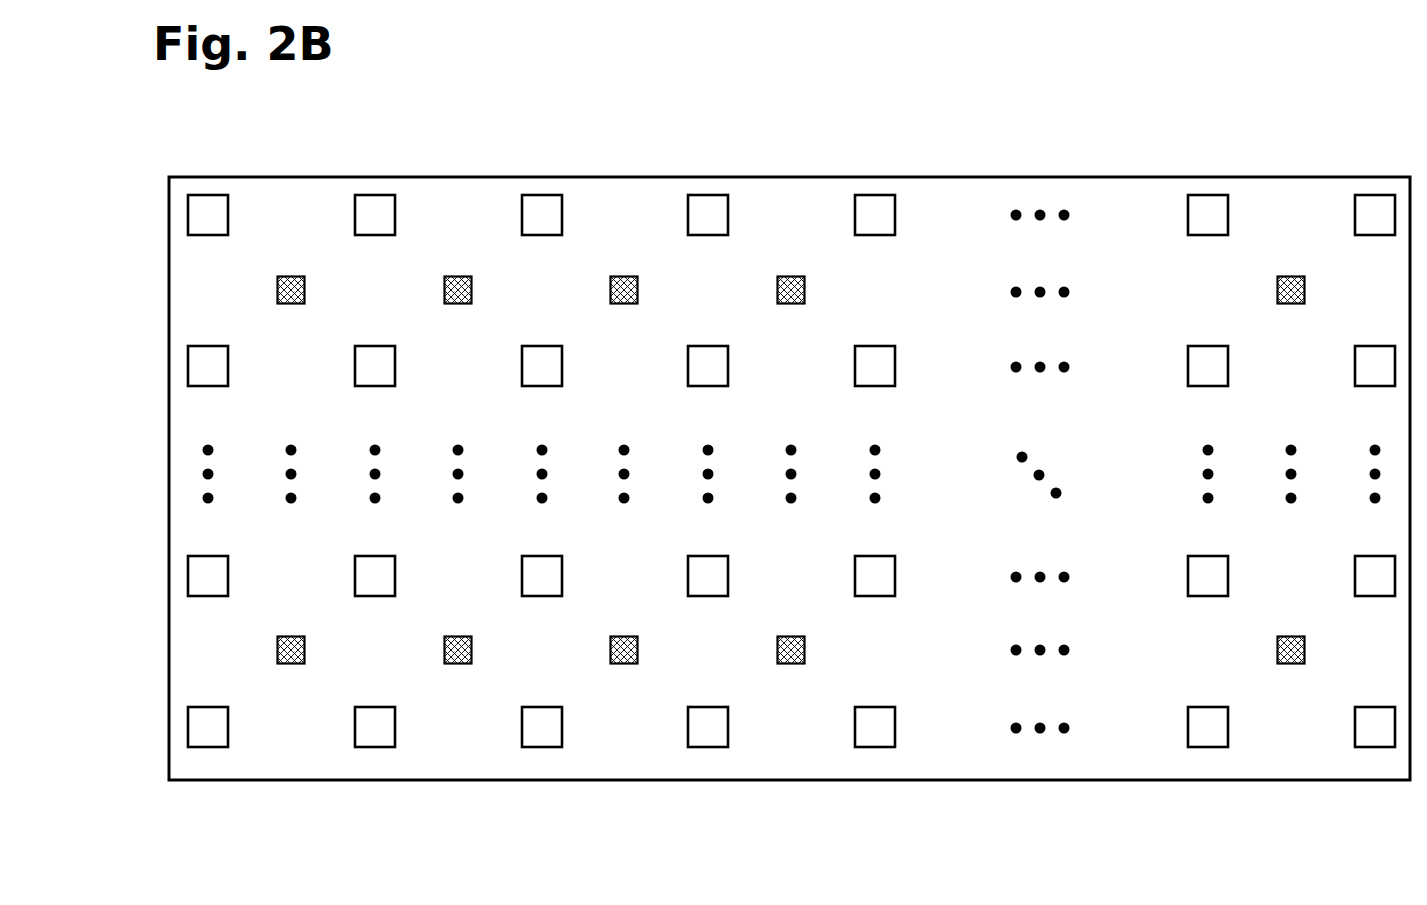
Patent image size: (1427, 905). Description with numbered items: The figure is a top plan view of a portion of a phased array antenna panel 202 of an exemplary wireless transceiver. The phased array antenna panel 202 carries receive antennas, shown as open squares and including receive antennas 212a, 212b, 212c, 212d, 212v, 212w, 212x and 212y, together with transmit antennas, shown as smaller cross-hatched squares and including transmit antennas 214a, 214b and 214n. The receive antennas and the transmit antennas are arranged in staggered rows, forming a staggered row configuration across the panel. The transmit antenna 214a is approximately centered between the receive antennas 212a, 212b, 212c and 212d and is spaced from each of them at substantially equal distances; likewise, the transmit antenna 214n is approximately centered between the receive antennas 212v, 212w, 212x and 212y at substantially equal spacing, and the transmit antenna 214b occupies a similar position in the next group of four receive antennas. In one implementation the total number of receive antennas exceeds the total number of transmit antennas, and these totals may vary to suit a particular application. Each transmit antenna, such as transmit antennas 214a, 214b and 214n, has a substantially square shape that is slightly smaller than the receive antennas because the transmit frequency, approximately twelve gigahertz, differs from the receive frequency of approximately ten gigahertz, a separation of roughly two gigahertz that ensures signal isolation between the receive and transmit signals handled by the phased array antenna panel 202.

The phased array antenna panel 202 is at (1267, 125).
The receive antenna 212a is at (207, 192).
The receive antenna 212b is at (377, 192).
The receive antenna 212c is at (209, 388).
The receive antenna 212d is at (376, 388).
The receive antenna 212v is at (1198, 556).
The receive antenna 212w is at (1368, 556).
The receive antenna 212x is at (1205, 748).
The receive antenna 212y is at (1375, 748).
The transmit antenna 214a is at (294, 276).
The transmit antenna 214b is at (463, 276).
The transmit antenna 214n is at (1292, 636).